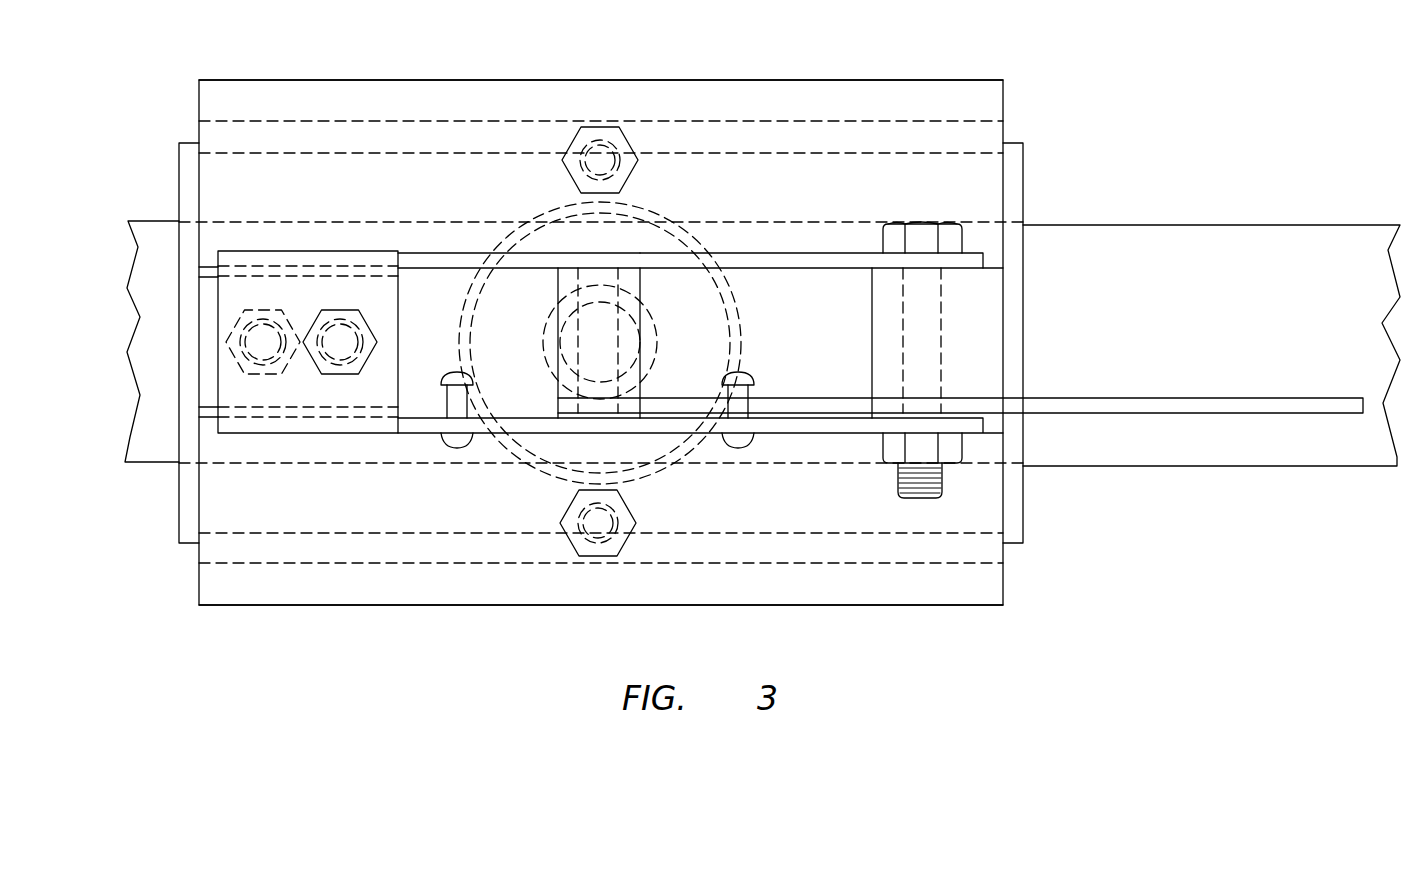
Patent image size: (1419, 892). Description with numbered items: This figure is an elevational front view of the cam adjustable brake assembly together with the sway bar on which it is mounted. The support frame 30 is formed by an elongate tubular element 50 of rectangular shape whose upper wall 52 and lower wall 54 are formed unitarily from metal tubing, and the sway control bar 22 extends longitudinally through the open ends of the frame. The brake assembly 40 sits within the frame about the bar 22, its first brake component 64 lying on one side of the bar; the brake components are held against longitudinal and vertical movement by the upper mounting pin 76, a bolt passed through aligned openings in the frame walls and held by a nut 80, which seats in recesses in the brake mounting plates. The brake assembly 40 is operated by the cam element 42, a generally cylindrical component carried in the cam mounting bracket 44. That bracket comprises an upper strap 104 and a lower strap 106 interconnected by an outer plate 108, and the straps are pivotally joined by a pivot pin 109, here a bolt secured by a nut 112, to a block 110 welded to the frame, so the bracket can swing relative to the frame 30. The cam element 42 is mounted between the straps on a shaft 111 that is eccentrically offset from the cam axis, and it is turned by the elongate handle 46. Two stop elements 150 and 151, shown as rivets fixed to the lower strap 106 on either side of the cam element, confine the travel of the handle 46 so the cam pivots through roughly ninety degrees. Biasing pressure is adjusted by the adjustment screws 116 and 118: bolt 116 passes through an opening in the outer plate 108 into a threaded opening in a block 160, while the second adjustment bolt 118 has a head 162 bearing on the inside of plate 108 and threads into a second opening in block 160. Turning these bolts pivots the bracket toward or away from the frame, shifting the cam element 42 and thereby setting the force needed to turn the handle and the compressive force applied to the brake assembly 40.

The sway control bar 22 is at (158, 221).
The support frame 30 is at (215, 80).
The brake assembly 40 is at (218, 150).
The cam element 42 is at (640, 285).
The cam mounting bracket 44 is at (855, 253).
The elongate handle 46 is at (1261, 418).
The tubular element 50 is at (293, 80).
The upper wall 52 is at (451, 80).
The lower wall 54 is at (368, 585).
The first brake component 64 is at (733, 153).
The upper mounting pin 76 is at (611, 128).
The nut 80 is at (610, 556).
The upper strap 104 is at (852, 268).
The lower strap 106 is at (848, 435).
The outer plate 108 is at (217, 378).
The pivot pin 109 is at (940, 486).
The block 110 is at (978, 298).
The shaft 111 is at (578, 283).
The nut 112 is at (950, 450).
The adjustment screw 116 is at (350, 307).
The second adjustment bolt 118 is at (268, 307).
The stop element 150 is at (742, 449).
The stop element 151 is at (457, 449).
The block 160 is at (217, 255).
The head 162 is at (230, 327).